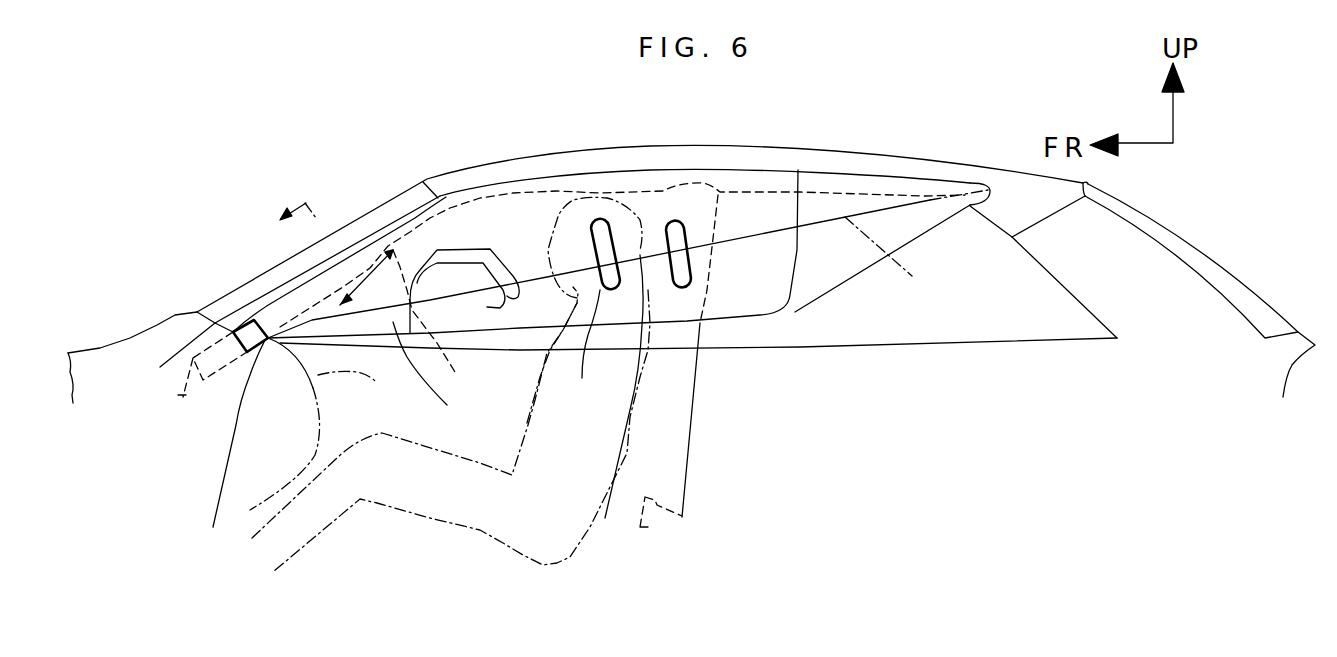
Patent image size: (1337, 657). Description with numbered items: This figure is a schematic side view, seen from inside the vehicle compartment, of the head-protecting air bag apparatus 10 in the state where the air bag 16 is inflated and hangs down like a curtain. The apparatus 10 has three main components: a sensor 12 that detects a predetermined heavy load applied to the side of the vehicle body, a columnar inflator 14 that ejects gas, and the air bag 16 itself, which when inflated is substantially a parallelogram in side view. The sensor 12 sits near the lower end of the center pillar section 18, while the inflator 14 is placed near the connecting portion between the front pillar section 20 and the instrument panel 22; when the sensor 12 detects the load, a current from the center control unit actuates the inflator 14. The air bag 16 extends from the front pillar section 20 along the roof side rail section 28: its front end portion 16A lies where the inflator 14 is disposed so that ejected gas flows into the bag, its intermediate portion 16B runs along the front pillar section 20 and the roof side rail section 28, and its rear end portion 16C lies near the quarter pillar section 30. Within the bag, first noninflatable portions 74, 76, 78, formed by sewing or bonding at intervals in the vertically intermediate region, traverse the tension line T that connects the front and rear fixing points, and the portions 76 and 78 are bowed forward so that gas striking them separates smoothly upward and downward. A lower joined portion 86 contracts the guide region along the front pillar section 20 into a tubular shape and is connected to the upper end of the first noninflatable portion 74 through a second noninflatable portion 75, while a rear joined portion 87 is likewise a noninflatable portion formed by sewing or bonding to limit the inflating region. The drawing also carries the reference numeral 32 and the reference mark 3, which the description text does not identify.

The head-protecting air bag apparatus 10 is at (802, 150).
The sensor 12 is at (686, 519).
The inflator 14 is at (221, 362).
The air bag 16 is at (598, 171).
The front end portion of the air bag 16A is at (283, 300).
The intermediate portion of the air bag 16B is at (560, 363).
The rear end portion of the air bag 16C is at (951, 185).
The center pillar section 18 is at (703, 331).
The front pillar section 20 is at (443, 323).
The instrument panel 22 is at (367, 389).
The roof side rail section 28 is at (735, 153).
The quarter pillar section 30 is at (1032, 255).
The front pillar garnish 32 is at (388, 220).
The first noninflatable portion 74 is at (497, 307).
The second noninflatable portion 75 is at (455, 257).
The first noninflatable portion 76 is at (612, 228).
The first noninflatable portion 78 is at (687, 287).
The joined portion 86 is at (437, 376).
The joined portion 87 is at (830, 268).
The section line 3- 3 is at (331, 251).
The tension line T is at (628, 264).